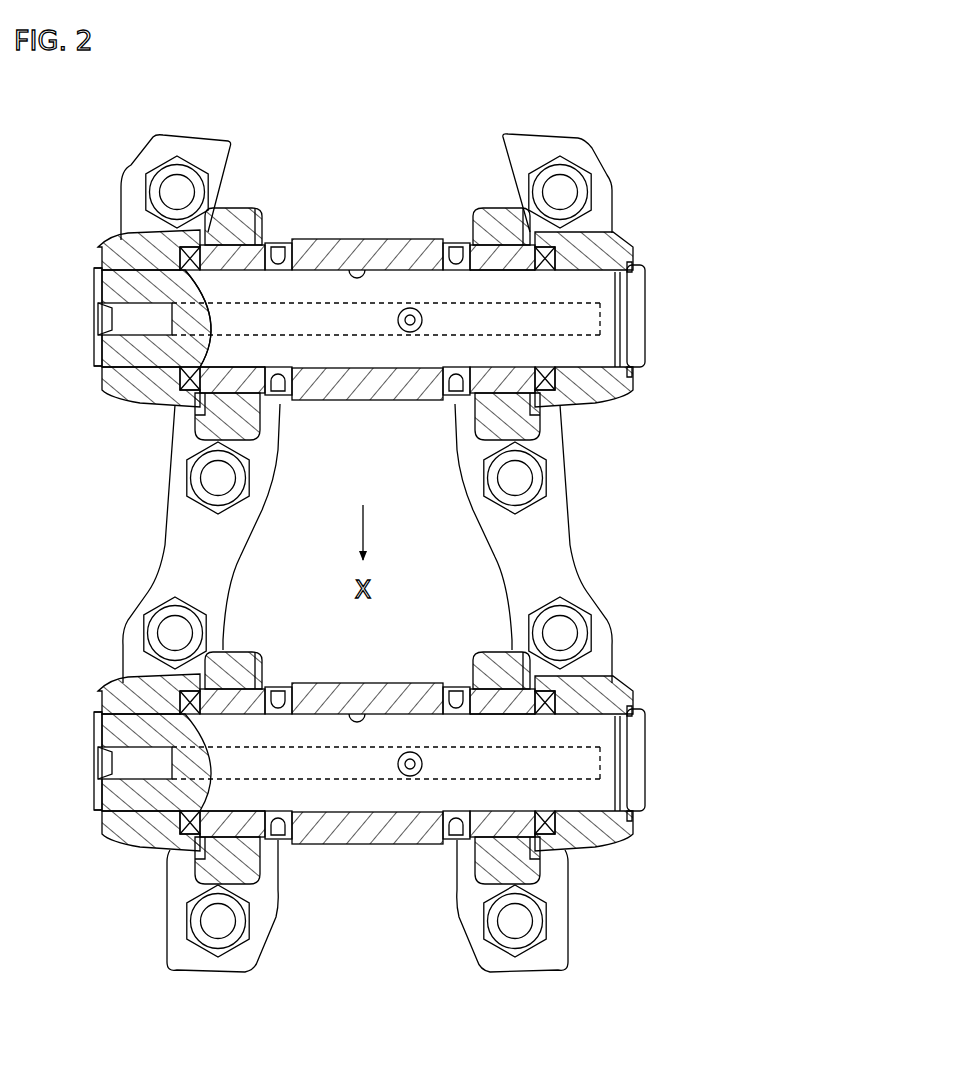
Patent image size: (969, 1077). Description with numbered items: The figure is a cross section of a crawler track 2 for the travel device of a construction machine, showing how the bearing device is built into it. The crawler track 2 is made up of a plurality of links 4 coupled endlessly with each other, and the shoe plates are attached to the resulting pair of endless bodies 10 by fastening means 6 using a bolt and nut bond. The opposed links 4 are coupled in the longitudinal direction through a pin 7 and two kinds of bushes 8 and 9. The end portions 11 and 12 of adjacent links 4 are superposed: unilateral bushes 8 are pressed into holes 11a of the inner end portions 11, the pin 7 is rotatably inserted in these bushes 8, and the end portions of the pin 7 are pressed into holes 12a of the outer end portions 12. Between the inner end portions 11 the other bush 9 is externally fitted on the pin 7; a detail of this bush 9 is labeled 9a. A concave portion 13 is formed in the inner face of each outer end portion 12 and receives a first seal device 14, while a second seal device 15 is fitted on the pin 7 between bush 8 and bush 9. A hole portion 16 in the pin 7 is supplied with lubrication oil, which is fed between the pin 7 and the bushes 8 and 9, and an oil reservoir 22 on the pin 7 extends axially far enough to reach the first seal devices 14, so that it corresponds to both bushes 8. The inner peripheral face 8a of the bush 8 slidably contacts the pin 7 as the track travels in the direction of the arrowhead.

The crawler track 2 is at (625, 166).
The link 4 is at (125, 215).
The fastening means 6 is at (225, 480).
The pin 7 is at (646, 296).
The bush 8 is at (262, 240).
The inner peripheral face 8a is at (500, 271).
The bush 9 is at (400, 239).
The projection 9a is at (357, 270).
The endless body 10 is at (140, 505).
The end portion 11 is at (230, 222).
The hole 11a is at (262, 410).
The end portion 12 is at (125, 397).
The hole 12a is at (97, 357).
The concave portion 13 is at (100, 264).
The first seal device 14 is at (190, 405).
The second seal device 15 is at (285, 246).
The hole portion 16 is at (195, 312).
The oil reservoir 22 is at (335, 258).